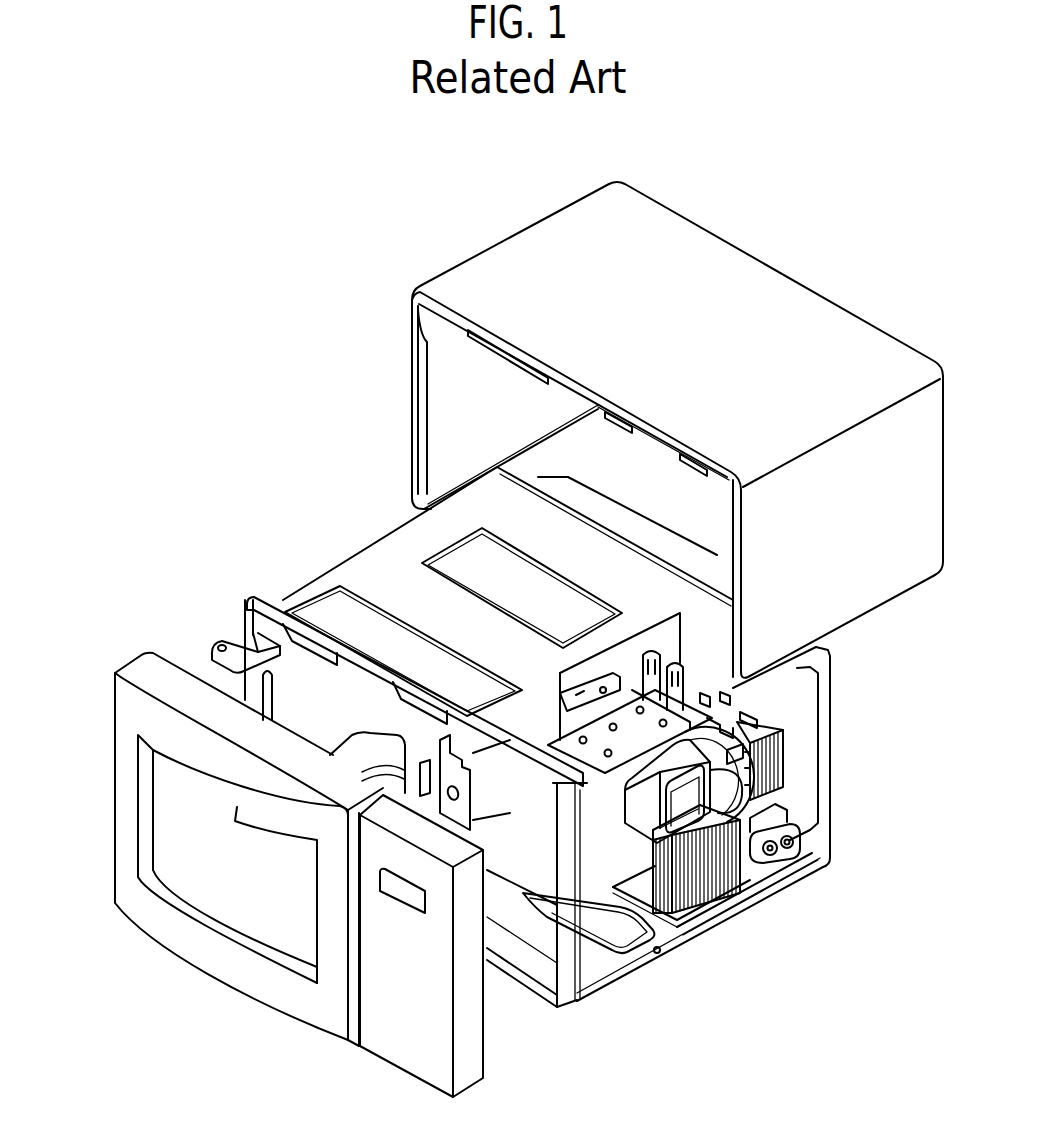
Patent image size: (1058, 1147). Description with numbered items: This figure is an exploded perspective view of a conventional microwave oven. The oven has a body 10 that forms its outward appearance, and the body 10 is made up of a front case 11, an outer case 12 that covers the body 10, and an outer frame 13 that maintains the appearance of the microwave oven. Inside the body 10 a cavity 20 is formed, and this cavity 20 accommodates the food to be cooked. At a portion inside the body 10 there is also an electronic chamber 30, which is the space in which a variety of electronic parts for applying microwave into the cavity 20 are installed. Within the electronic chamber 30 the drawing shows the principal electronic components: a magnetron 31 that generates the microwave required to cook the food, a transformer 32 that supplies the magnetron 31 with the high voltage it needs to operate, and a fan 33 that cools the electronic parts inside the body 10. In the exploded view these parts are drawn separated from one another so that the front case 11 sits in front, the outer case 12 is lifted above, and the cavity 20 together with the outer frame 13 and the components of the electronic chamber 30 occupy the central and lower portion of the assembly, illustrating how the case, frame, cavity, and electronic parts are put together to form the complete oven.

The body 10 is at (290, 560).
The front case 11 is at (113, 790).
The outer case 12 is at (737, 293).
The outer frame 13 is at (268, 598).
The cavity 20 is at (334, 736).
The electronic chamber 30 is at (656, 912).
The magnetron 31 is at (730, 830).
The transformer 32 is at (682, 900).
The fan 33 is at (722, 783).